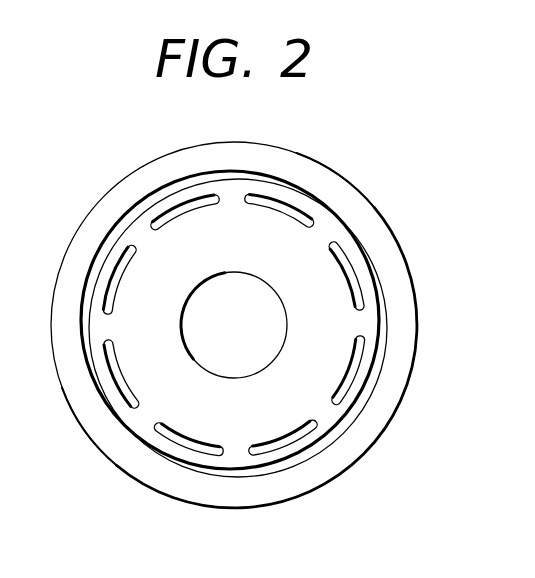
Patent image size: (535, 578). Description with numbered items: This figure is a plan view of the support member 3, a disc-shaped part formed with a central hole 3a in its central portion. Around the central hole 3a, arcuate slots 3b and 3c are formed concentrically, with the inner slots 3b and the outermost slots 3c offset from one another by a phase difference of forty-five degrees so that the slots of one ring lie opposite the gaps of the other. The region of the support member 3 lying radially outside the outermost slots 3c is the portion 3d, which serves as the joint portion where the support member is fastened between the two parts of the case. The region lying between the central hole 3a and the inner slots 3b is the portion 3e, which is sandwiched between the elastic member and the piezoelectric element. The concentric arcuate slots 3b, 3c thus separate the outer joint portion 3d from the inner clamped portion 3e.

The support member 3 is at (261, 495).
The central hole 3a is at (253, 293).
The arcuate slots 3b is at (328, 415).
The arcuate slots 3c is at (302, 460).
The portion 3d is at (410, 302).
The portion 3e is at (152, 403).